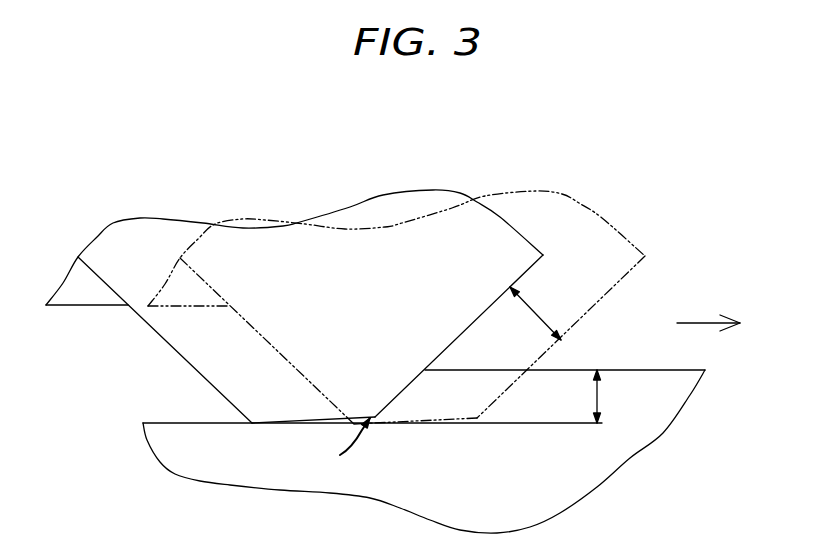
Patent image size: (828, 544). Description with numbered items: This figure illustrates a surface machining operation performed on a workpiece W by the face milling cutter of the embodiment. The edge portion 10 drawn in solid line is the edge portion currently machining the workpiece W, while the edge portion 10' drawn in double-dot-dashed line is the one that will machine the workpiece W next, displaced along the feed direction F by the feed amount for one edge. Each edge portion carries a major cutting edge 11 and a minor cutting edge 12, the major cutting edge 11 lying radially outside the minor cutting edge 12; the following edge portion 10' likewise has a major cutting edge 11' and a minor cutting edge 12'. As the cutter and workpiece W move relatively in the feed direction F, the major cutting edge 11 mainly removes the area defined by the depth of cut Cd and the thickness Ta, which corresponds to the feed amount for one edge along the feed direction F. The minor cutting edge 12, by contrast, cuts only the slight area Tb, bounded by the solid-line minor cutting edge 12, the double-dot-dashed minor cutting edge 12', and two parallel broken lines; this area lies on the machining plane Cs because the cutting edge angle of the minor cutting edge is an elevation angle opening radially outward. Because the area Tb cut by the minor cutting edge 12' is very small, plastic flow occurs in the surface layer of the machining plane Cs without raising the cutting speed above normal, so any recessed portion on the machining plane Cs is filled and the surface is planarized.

The edge portion 10 is at (294, 292).
The edge portion 10' is at (396, 283).
The major cutting edge 11 is at (459, 336).
The major cutting edge 11' is at (588, 334).
The minor cutting edge 12 is at (311, 443).
The minor cutting edge 12' is at (424, 442).
The workpiece W is at (610, 473).
The machining plane Cs is at (202, 420).
The depth of cut Cd is at (611, 396).
The thickness Ta is at (535, 313).
The area Tb is at (343, 449).
The feed direction F is at (708, 312).